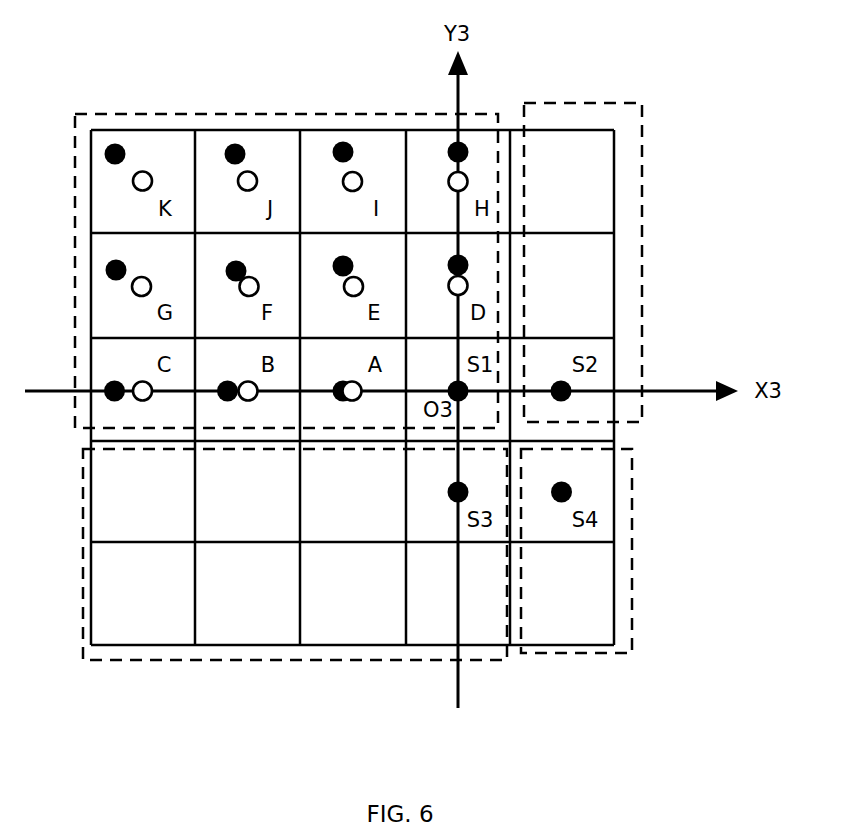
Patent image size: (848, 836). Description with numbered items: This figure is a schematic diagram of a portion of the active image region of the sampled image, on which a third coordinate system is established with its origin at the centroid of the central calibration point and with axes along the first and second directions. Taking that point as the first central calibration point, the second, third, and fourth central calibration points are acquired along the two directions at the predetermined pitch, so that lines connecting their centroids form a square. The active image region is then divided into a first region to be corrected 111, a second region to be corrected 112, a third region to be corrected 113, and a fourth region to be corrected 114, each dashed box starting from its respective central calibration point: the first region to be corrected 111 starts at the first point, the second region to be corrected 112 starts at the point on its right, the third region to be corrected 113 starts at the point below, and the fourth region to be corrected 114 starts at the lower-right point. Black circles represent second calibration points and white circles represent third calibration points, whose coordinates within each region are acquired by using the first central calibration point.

The first region to be corrected 111 is at (154, 104).
The second region to be corrected 112 is at (578, 96).
The third region to be corrected 113 is at (200, 673).
The fourth region to be corrected 114 is at (594, 670).